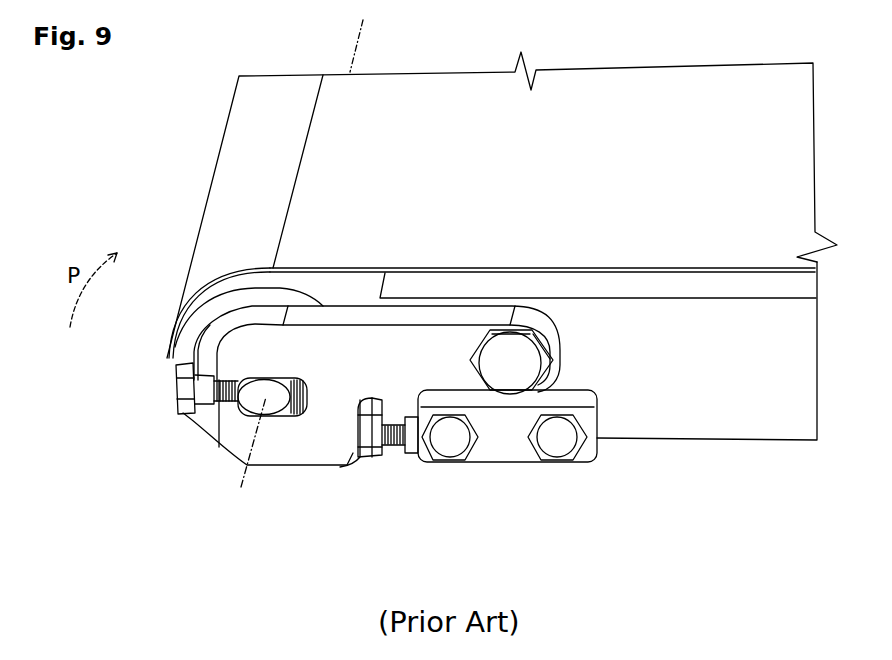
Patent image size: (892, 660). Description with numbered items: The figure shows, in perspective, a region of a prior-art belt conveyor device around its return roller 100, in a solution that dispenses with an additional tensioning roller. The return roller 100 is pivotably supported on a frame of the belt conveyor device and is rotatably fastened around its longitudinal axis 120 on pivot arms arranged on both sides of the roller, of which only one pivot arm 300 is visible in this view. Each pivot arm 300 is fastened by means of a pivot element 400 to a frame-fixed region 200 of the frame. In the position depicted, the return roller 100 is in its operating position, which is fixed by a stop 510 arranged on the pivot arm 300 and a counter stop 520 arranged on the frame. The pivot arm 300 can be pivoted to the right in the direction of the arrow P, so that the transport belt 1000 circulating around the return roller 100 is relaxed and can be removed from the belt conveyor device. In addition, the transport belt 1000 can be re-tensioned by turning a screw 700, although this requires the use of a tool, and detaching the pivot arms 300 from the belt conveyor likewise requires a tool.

The transport belt 1000 is at (657, 85).
The frame-fixed region 200 is at (725, 423).
The return roller 100 is at (187, 338).
The screw 700 is at (173, 393).
The longitudinal axis 120 is at (227, 448).
The pivot arm 300 is at (270, 453).
The stop 510 is at (350, 468).
The counter stop 520 is at (368, 458).
The pivot element 400 is at (515, 376).